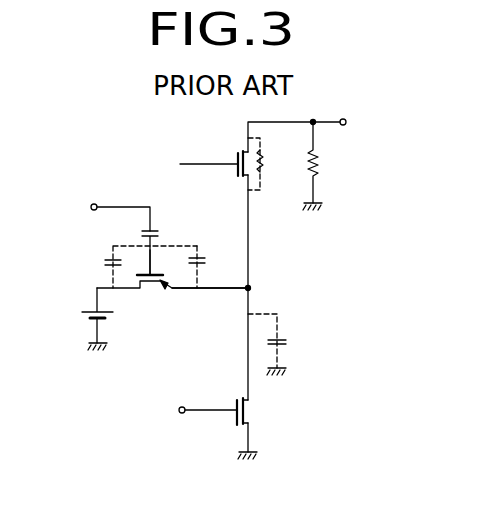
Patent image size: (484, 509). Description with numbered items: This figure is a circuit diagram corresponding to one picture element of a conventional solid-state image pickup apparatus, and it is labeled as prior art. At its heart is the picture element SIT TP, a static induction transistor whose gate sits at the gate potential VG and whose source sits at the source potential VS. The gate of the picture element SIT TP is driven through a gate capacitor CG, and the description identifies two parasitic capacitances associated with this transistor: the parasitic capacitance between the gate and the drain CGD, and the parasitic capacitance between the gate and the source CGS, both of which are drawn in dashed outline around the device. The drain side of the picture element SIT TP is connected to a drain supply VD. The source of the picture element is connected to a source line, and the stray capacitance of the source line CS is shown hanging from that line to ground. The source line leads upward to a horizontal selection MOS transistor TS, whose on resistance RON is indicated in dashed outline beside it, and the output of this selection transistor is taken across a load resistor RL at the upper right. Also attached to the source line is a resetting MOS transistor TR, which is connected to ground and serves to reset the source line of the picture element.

The horizontal selection MOS transistor TS is at (232, 150).
The on resistance RON is at (273, 164).
The load resistor RL is at (321, 166).
The gate capacitor CG is at (136, 246).
The parasitic capacitance between the gate and the drain CGD is at (129, 267).
The parasitic capacitance between the gate and the source CGS is at (214, 267).
The gate potential VG is at (164, 266).
The source potential VS is at (206, 301).
The picture element SIT TP is at (150, 292).
The drain voltage source VD is at (82, 319).
The stray capacitance of the source line CS is at (281, 344).
The resetting MOS transistor TR is at (232, 417).